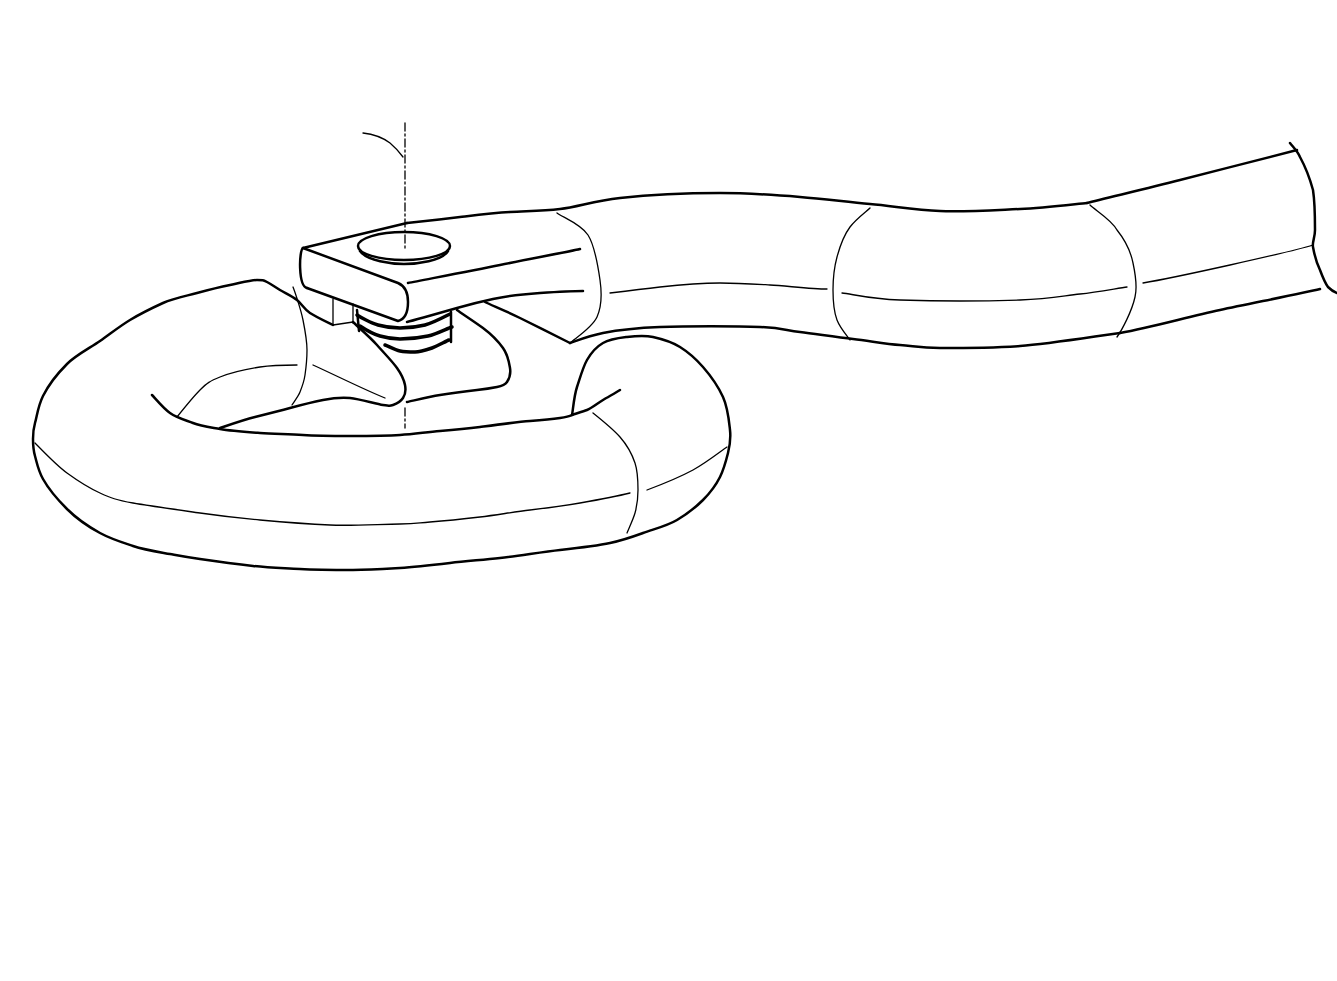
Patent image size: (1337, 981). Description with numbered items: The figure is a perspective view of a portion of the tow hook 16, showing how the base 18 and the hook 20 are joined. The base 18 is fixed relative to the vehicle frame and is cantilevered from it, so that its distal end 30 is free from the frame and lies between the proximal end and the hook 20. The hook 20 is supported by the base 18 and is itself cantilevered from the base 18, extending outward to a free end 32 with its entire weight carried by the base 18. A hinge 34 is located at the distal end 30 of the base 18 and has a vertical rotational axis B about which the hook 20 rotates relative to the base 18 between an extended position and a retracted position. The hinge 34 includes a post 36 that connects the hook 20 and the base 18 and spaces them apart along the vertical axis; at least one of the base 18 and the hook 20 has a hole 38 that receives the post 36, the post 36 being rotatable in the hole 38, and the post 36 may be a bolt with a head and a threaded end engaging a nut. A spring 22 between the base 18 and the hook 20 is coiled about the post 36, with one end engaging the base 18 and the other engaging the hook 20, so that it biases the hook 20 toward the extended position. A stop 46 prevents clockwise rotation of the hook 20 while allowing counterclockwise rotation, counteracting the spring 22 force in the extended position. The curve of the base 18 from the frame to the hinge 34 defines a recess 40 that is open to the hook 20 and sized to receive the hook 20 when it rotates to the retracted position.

The tow hook 16 is at (1160, 113).
The base 18 is at (1208, 300).
The hook 20 is at (257, 543).
The spring 22 is at (437, 338).
The distal end 30 is at (317, 265).
The free end 32 is at (583, 380).
The hinge 34 is at (317, 214).
The post 36 is at (423, 243).
The hole 38 is at (447, 250).
The recess 40 is at (744, 367).
The stop 46 is at (298, 291).